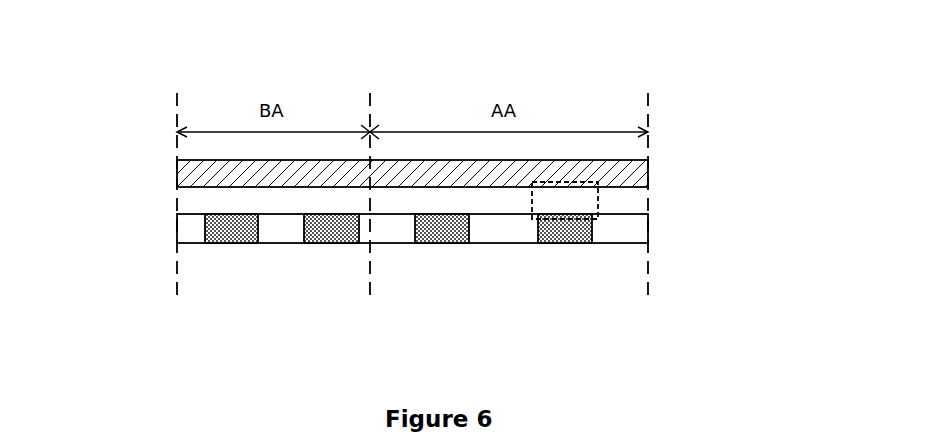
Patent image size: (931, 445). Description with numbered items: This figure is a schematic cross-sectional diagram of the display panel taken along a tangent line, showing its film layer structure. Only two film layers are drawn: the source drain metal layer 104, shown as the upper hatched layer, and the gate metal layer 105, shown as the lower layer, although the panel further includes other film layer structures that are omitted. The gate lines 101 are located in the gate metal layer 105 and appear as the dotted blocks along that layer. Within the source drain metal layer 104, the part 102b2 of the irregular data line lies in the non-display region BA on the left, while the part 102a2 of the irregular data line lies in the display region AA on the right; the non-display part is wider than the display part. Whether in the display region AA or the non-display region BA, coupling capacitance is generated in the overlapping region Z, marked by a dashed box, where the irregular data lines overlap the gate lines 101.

The source drain metal layer 104 is at (434, 114).
The gate metal layer 105 is at (372, 281).
The part of the irregular data line in the non-display region 102b2 is at (229, 176).
The part of the irregular data line in the display region 102a2 is at (620, 184).
The gate line 101 is at (560, 222).
The overlapping region Z is at (598, 207).